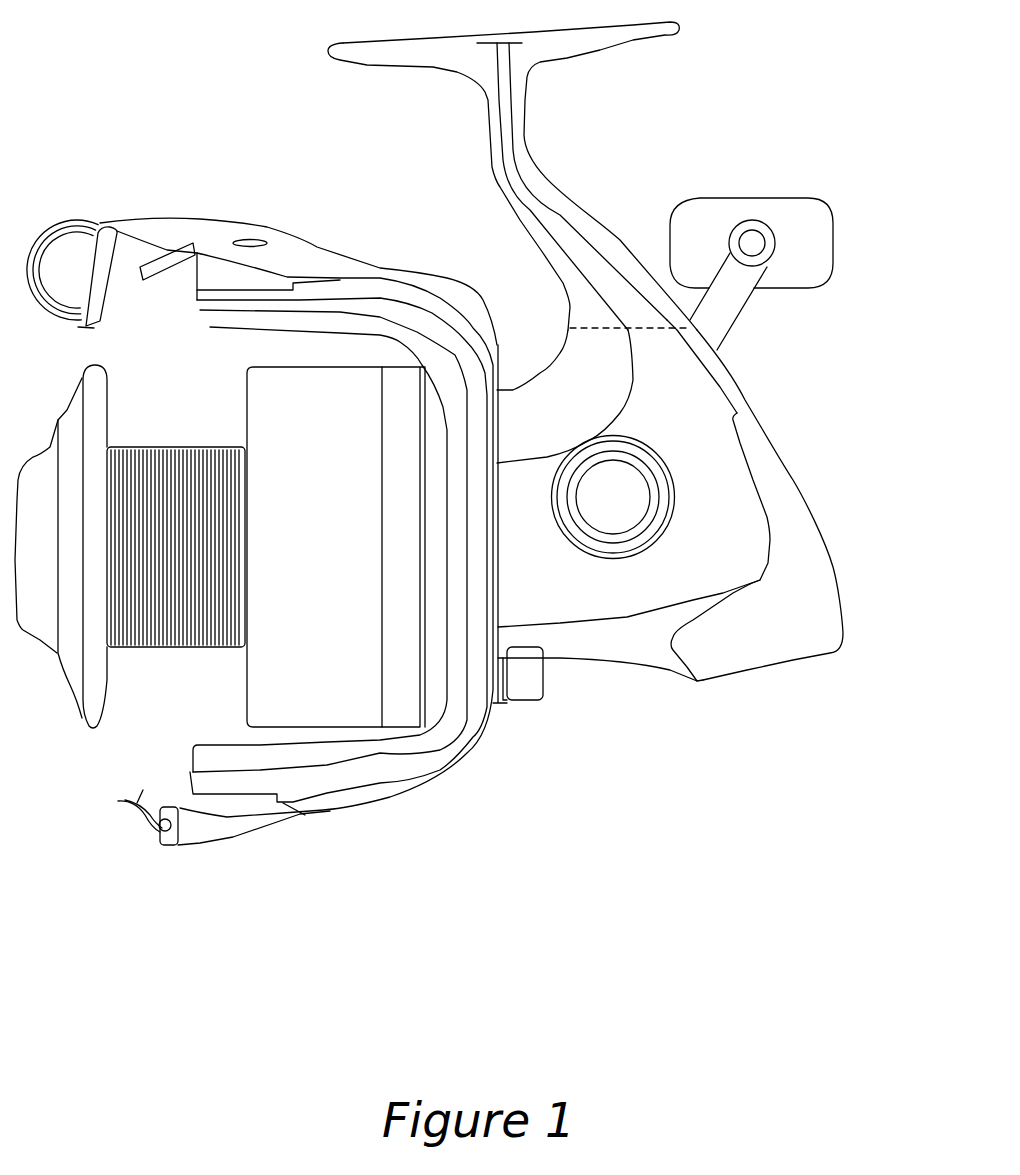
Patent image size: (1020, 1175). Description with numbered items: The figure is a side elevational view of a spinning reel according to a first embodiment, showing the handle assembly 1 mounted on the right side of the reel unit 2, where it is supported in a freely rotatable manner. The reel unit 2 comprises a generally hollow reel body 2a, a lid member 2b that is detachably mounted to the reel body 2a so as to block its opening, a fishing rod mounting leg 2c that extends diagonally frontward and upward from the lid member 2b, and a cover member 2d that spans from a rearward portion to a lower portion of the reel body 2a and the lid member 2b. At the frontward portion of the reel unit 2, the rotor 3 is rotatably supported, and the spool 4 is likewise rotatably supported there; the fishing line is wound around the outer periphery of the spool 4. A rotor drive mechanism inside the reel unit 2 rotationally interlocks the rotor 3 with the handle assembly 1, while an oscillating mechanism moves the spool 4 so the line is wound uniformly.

The handle assembly 1 is at (770, 213).
The reel unit 2 is at (637, 140).
The reel body 2a is at (737, 510).
The lid member 2b is at (723, 383).
The fishing rod mounting leg 2c is at (523, 143).
The cover member 2d is at (790, 623).
The rotor 3 is at (470, 740).
The spool 4 is at (157, 677).